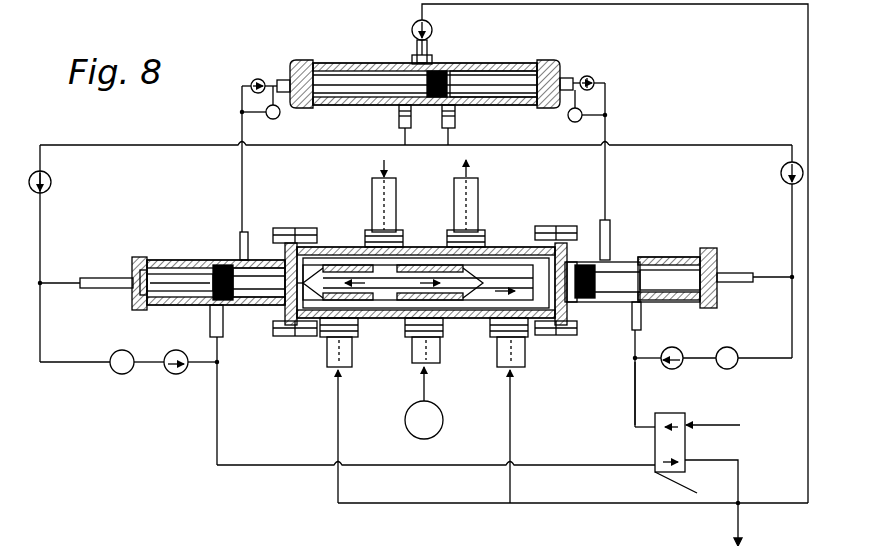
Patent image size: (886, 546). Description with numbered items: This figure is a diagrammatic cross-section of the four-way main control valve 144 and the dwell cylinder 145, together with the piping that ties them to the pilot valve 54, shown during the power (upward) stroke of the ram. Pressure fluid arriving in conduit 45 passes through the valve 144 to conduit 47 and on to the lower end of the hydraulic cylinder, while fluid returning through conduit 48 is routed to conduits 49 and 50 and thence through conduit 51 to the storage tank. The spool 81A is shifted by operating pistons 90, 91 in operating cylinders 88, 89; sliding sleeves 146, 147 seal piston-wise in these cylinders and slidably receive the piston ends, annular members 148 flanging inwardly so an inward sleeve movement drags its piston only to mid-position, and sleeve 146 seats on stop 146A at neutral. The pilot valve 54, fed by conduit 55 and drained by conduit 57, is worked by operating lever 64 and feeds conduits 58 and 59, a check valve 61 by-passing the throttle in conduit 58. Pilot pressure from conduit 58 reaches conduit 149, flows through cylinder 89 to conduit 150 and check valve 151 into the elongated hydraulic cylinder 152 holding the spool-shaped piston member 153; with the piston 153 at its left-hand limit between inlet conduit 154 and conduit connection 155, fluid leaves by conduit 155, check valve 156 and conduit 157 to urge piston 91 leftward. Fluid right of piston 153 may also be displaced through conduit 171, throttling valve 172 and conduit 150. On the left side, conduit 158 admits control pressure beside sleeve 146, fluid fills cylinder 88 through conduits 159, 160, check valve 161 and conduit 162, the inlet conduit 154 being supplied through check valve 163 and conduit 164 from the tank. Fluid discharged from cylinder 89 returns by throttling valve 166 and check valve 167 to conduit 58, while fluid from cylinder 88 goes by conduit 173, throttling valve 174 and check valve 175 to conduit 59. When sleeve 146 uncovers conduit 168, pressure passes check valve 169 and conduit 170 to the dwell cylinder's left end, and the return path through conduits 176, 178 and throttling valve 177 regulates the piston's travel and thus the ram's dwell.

The conduit 45 is at (440, 360).
The conduit 47 is at (455, 208).
The conduit 48 is at (398, 190).
The conduit 49 is at (330, 368).
The conduit 50 is at (503, 366).
The conduit 51 is at (575, 505).
The pilot valve 54 is at (656, 446).
The conduit 55 is at (733, 428).
The conduit 57 is at (697, 465).
The conduit 58 is at (637, 398).
The conduit 59 is at (547, 470).
The check valve 61 is at (624, 538).
The operating lever 64 is at (668, 488).
The valve spool 81A is at (372, 318).
The operating cylinder 88 is at (172, 260).
The operating cylinder 89 is at (688, 258).
The operating piston 90 is at (177, 291).
The operating piston 91 is at (640, 262).
The four-way control valve 144 is at (230, 245).
The dwell cylinder 145 is at (360, 63).
The sliding sleeve 146 is at (280, 306).
The stop 146A is at (275, 342).
The sliding sleeve 147 is at (582, 305).
The annular member 148 is at (213, 262).
The conduit 149 is at (628, 330).
The conduit 150 is at (616, 220).
The check valve 151 is at (600, 76).
The hydraulic cylinder 152 is at (502, 65).
The piston member 153 is at (352, 94).
The inlet conduit 154 is at (432, 58).
The conduit connection 155 is at (457, 119).
The check valve 156 is at (782, 188).
The conduit 157 is at (740, 270).
The conduit 158 is at (210, 322).
The conduit 159 is at (95, 289).
The conduit 160 is at (42, 242).
The check valve 161 is at (53, 186).
The conduit 162 is at (424, 146).
The check valve 163 is at (436, 20).
The conduit 164 is at (624, 8).
The throttling valve 166 is at (732, 347).
The check valve 167 is at (688, 348).
The conduit 168 is at (248, 236).
The check valve 169 is at (250, 80).
The conduit 170 is at (283, 78).
The conduit 171 is at (575, 78).
The throttling valve 172 is at (570, 121).
The conduit 173 is at (54, 362).
The throttling valve 174 is at (124, 375).
The check valve 175 is at (172, 372).
The conduit 176 is at (262, 98).
The throttling valve 177 is at (278, 118).
The conduit 178 is at (240, 110).